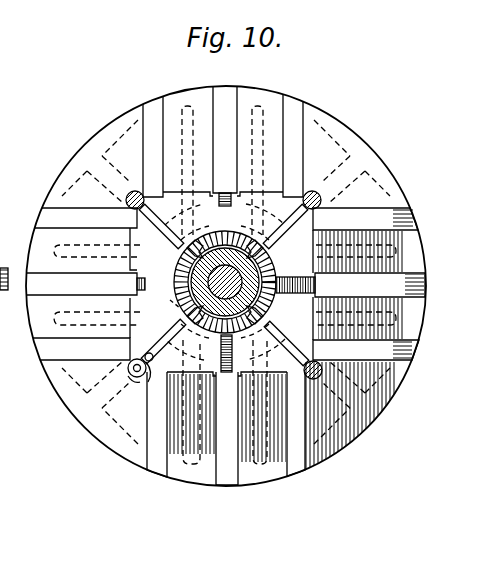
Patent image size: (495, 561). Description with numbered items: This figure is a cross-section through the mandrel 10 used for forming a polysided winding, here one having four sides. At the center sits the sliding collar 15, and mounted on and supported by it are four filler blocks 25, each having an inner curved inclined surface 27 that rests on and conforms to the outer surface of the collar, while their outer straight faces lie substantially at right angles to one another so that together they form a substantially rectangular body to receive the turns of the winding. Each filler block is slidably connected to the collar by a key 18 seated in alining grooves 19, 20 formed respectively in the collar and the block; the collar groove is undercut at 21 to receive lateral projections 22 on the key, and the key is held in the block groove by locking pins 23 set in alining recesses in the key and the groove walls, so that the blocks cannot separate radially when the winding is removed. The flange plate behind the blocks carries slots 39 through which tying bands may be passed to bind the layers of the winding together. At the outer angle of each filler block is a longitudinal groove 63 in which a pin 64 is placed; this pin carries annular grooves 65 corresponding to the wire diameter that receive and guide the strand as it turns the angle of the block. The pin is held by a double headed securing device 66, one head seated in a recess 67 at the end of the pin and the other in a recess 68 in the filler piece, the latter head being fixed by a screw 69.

The mandrel 10 is at (270, 274).
The sliding collar 15 is at (315, 288).
The key 18 is at (204, 293).
The groove 19 is at (255, 241).
The groove 20 is at (283, 240).
The undercut 21 is at (225, 280).
The lateral projection 22 is at (187, 317).
The locking pin 23 is at (195, 240).
The filler block 25 is at (262, 318).
The inner curved inclined surface 27 is at (198, 326).
The slot 39 is at (303, 440).
The longitudinal groove 63 is at (288, 345).
The pin 64 is at (136, 360).
The groove 65 is at (308, 192).
The double headed securing device 66 is at (132, 378).
The recess 67 is at (128, 370).
The recess 68 is at (148, 381).
The screw 69 is at (145, 355).